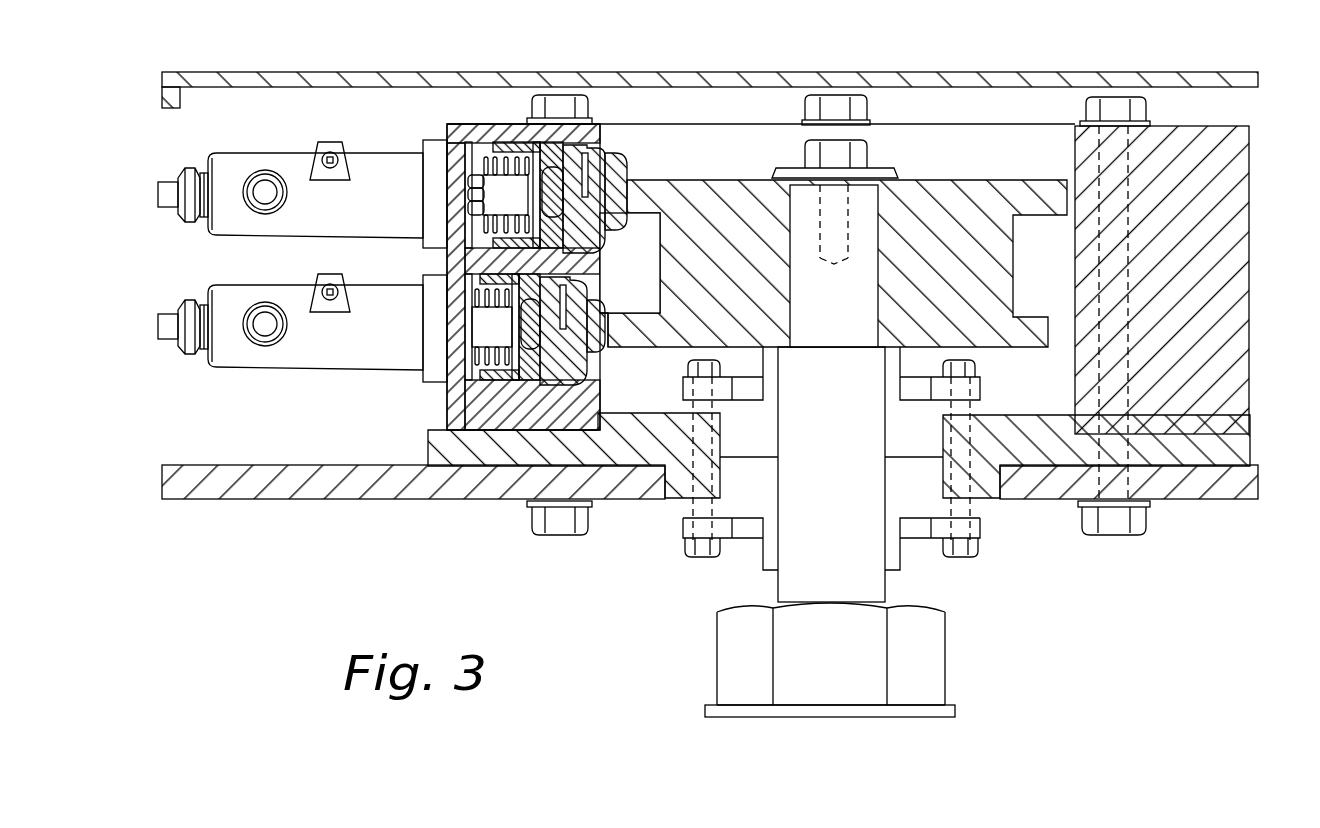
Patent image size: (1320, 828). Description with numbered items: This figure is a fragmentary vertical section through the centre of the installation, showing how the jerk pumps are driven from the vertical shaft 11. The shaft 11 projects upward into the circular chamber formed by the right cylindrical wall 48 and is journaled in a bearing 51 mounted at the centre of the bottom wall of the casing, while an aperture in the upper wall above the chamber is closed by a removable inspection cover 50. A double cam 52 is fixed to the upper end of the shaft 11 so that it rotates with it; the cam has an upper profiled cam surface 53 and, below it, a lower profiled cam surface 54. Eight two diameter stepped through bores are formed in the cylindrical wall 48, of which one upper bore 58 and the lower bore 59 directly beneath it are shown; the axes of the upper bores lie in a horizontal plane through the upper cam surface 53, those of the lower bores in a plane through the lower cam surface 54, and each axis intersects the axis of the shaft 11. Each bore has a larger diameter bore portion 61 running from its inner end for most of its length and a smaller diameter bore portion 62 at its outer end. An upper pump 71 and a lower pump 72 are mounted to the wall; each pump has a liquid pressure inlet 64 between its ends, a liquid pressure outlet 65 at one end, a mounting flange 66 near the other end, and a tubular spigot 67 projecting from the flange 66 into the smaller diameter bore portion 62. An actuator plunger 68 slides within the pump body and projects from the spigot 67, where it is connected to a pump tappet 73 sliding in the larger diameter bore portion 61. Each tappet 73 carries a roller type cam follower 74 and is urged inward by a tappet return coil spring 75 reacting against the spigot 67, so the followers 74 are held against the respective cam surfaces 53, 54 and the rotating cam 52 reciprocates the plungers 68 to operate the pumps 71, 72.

The shaft 11 is at (868, 588).
The right cylindrical wall 48 is at (992, 140).
The inspection cover 50 is at (757, 72).
The bearing 51 is at (673, 490).
The double cam 52 is at (703, 198).
The upper profiled cam surface 53 is at (634, 193).
The lower profiled cam surface 54 is at (603, 325).
The upper two diameter stepped through bore 58 is at (519, 134).
The lower two diameter stepped through bore 59 is at (500, 392).
The larger diameter bore portion 61 is at (594, 144).
The smaller diameter bore portion 62 is at (454, 146).
The liquid pressure inlet 64 is at (259, 190).
The liquid pressure outlet 65 is at (165, 190).
The mounting flange 66 is at (434, 142).
The tubular spigot 67 is at (460, 163).
The actuator plunger 68 is at (495, 193).
The upper pump 71 is at (366, 178).
The lower pump 72 is at (364, 320).
The pump tappet 73 is at (550, 146).
The roller type cam follower 74 is at (620, 180).
The tappet return coil spring 75 is at (483, 156).